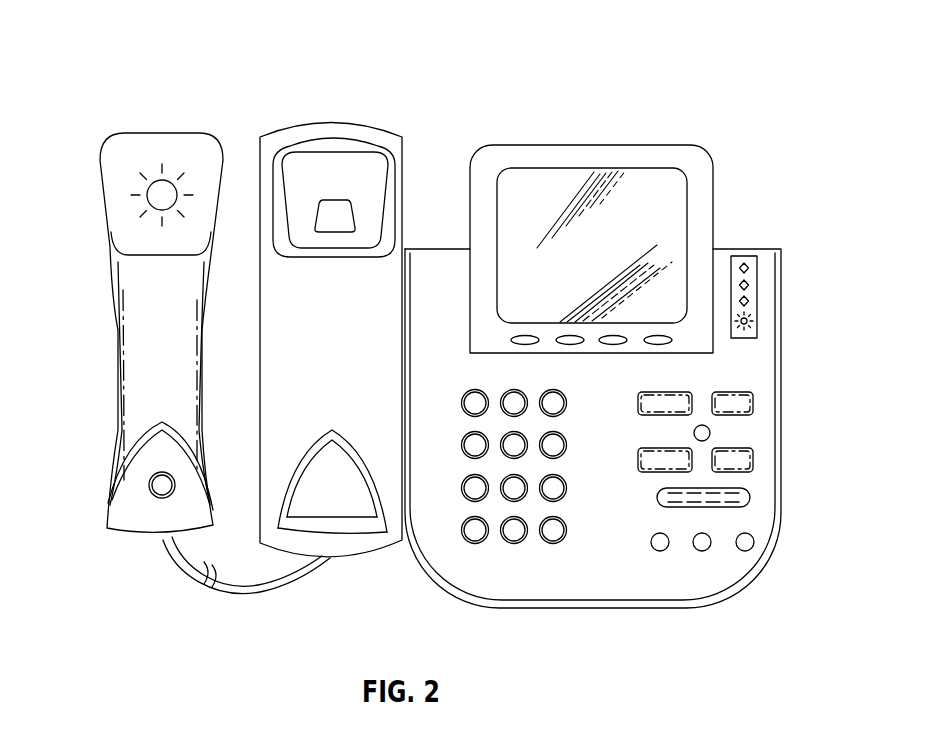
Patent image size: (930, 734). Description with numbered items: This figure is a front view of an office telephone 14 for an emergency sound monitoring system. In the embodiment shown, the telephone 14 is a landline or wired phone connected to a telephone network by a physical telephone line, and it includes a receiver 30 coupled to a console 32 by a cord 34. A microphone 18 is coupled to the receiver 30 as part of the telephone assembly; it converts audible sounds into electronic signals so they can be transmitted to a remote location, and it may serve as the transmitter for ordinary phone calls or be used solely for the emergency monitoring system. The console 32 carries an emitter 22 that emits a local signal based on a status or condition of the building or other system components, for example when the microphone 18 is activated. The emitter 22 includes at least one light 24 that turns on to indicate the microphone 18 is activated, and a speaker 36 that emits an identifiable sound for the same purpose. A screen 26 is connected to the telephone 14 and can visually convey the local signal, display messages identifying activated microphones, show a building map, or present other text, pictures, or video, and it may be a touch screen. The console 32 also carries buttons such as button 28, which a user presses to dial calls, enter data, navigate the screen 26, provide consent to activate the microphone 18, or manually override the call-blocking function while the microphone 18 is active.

The telephone 14 is at (103, 47).
The microphone 18 is at (149, 487).
The emitter 22 is at (758, 290).
The light 24 is at (745, 263).
The screen 26 is at (653, 183).
The button 28 is at (748, 403).
The receiver 30 is at (120, 353).
The console 32 is at (422, 247).
The cord 34 is at (270, 592).
The speaker 36 is at (753, 327).